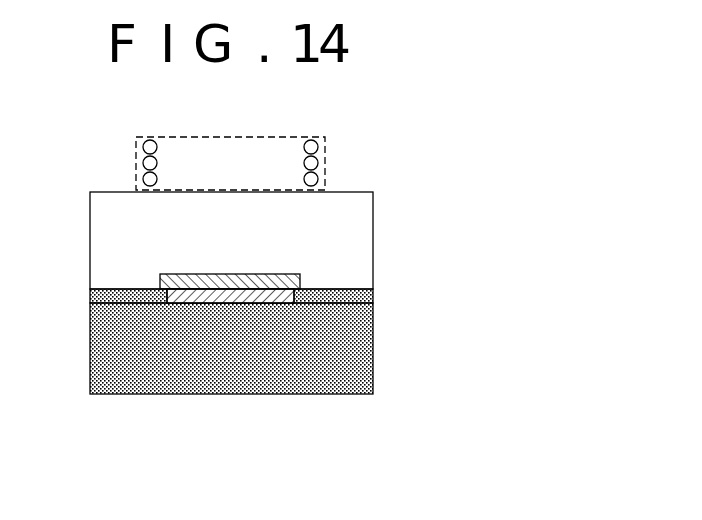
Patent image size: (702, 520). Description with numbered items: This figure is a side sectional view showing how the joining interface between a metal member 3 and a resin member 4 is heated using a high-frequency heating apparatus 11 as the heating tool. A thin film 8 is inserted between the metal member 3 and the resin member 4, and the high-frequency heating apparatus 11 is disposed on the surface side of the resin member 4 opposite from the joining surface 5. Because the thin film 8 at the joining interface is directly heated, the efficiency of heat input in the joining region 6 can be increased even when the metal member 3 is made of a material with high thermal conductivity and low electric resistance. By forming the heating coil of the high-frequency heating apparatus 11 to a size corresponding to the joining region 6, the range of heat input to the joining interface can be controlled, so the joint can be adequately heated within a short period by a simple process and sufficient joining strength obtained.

The metal member 3 is at (373, 343).
The resin member 4 is at (373, 237).
The joining surface 5 is at (180, 273).
The joining region 6 is at (165, 293).
The thin film 8 is at (373, 291).
The high-frequency heating apparatus 11 is at (325, 162).